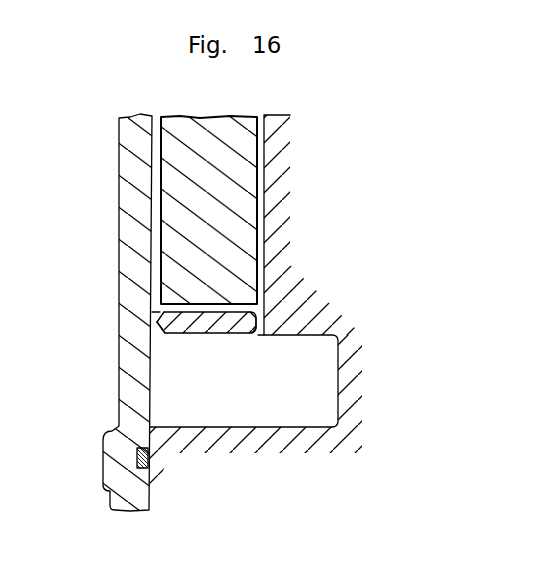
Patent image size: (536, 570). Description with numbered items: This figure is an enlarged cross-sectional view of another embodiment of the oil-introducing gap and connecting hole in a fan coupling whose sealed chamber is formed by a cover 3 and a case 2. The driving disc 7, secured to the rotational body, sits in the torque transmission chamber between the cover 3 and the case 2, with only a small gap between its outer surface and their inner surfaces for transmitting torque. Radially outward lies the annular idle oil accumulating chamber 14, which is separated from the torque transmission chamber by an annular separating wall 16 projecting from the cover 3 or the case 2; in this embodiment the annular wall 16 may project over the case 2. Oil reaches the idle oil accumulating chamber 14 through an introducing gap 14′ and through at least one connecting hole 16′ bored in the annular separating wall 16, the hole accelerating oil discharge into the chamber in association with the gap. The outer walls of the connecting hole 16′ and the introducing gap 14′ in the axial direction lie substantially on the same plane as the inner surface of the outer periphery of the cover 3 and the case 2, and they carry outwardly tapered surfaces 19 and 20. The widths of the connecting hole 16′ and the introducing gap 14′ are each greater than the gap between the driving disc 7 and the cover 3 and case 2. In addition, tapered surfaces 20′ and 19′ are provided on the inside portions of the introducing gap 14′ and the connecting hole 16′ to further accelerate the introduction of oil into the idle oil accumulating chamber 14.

The case 2 is at (276, 191).
The cover 3 is at (128, 166).
The driving disc 7 is at (214, 130).
The idle oil accumulating chamber 14 is at (238, 420).
The introducing gap 14′ is at (160, 312).
The annular separating wall 16 is at (196, 325).
The connecting hole 16′ is at (263, 322).
The outwardly tapered surface 19 is at (252, 333).
The tapered surface 19′ is at (260, 312).
The outwardly tapered surface 20 is at (157, 326).
The tapered surface 20′ is at (157, 318).